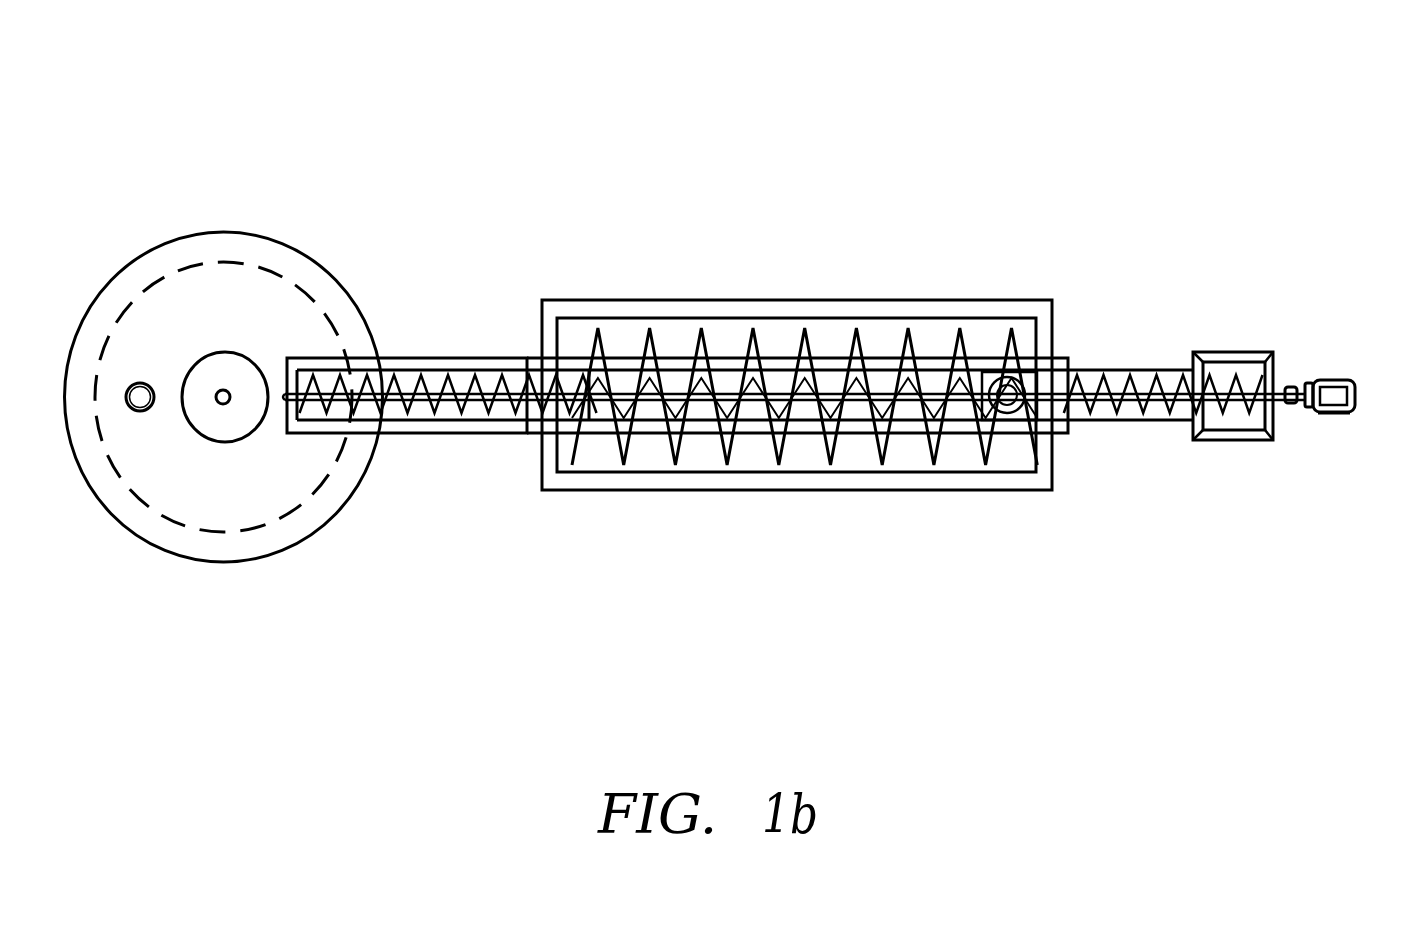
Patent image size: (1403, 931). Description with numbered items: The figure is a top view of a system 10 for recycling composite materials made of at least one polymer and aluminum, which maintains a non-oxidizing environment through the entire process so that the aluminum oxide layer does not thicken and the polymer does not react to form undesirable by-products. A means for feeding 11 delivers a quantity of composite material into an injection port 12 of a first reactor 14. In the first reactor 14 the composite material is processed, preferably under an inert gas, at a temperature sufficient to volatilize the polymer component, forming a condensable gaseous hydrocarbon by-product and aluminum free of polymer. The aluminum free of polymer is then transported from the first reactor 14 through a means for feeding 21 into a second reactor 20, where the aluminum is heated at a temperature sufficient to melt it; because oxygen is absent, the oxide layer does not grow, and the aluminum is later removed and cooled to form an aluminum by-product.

The system 10 is at (1036, 161).
The means for feeding 11 is at (1137, 416).
The injection port 12 is at (1003, 384).
The first reactor 14 is at (895, 445).
The second reactor 20 is at (223, 556).
The means for feeding 21 is at (442, 358).